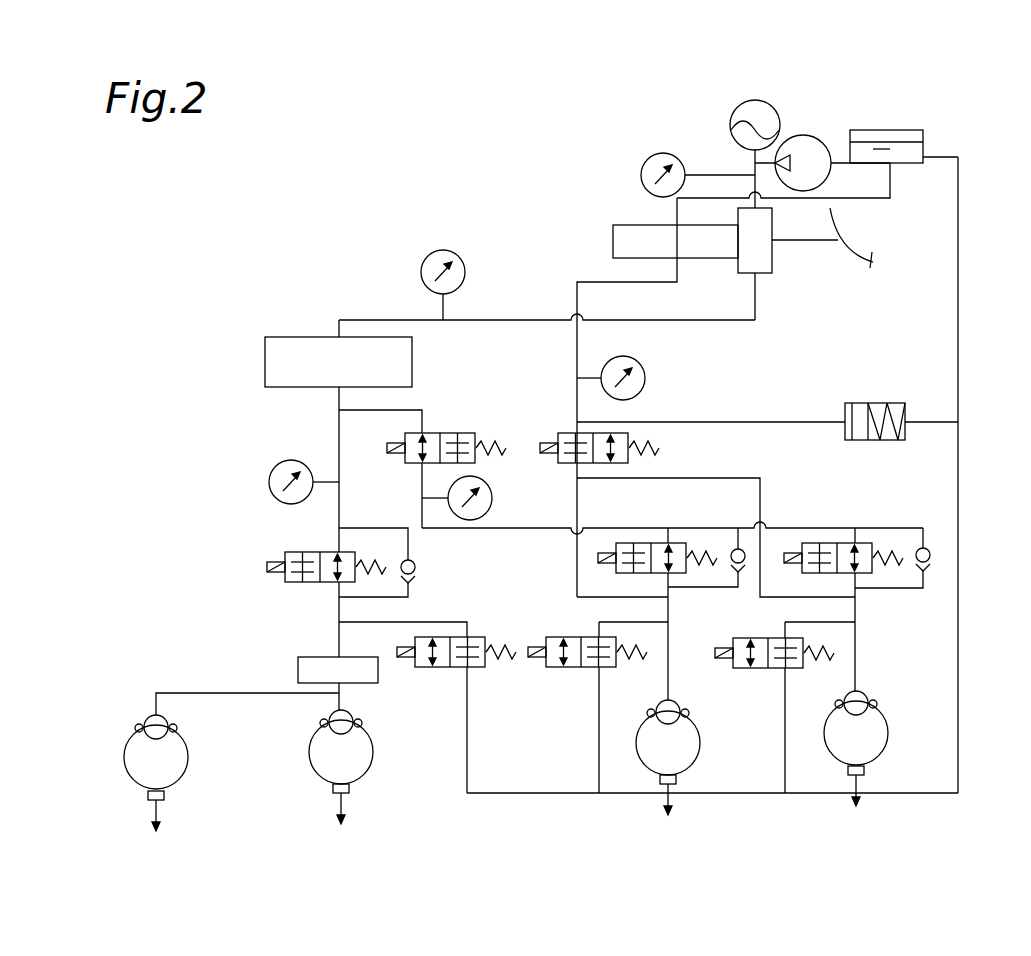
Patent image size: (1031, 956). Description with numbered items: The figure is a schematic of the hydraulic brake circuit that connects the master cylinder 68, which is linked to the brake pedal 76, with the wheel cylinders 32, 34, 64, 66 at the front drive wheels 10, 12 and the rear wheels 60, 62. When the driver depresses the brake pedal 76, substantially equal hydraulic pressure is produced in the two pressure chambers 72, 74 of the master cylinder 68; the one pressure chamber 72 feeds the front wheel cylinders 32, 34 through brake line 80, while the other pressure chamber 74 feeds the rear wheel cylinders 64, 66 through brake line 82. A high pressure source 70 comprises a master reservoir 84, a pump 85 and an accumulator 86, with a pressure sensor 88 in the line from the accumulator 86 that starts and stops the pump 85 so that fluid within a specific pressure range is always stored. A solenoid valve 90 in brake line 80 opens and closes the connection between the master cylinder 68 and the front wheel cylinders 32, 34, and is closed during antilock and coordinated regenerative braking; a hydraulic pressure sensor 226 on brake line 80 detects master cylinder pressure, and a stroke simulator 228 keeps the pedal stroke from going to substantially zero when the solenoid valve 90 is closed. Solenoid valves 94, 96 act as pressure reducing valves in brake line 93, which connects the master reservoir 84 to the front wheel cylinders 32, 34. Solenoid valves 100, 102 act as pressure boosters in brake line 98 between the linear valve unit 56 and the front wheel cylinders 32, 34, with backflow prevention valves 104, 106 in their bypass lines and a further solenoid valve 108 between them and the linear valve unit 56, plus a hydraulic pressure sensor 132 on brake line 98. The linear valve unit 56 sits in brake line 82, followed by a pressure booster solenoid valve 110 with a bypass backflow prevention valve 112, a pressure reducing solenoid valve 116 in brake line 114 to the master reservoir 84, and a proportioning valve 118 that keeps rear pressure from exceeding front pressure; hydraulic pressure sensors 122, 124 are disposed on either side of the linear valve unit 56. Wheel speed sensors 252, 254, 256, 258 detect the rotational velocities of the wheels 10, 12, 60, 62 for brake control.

The front drive wheel 10 is at (890, 730).
The front drive wheel 12 is at (695, 740).
The wheel cylinder 32 is at (866, 697).
The wheel cylinder 34 is at (658, 702).
The linear valve unit 56 is at (412, 359).
The rear wheel 60 is at (373, 750).
The rear wheel 62 is at (188, 754).
The wheel cylinder 64 is at (355, 717).
The wheel cylinder 66 is at (168, 722).
The master cylinder 68 is at (604, 211).
The high pressure source 70 is at (841, 119).
The pressure chamber 72 is at (705, 258).
The pressure chamber 74 is at (772, 263).
The brake pedal 76 is at (875, 258).
The brake line 80 is at (577, 297).
The brake line 82 is at (366, 320).
The master reservoir 84 is at (923, 137).
The pump 85 is at (828, 179).
The accumulator 86 is at (732, 130).
The pressure sensor 88 is at (642, 175).
The solenoid valve 90 is at (630, 438).
The brake line 93 is at (958, 284).
The solenoid valve 94 is at (741, 668).
The solenoid valve 96 is at (558, 667).
The brake line 98 is at (425, 410).
The solenoid valve 100 is at (812, 573).
The solenoid valve 102 is at (626, 573).
The backflow prevention valve 104 is at (924, 540).
The backflow prevention valve 106 is at (742, 575).
The solenoid valve 108 is at (415, 465).
The solenoid valve 110 is at (300, 582).
The backflow prevention valve 112 is at (418, 578).
The brake line 114 is at (452, 622).
The solenoid valve 116 is at (444, 667).
The proportioning valve 118 is at (298, 670).
The hydraulic pressure sensor 122 is at (443, 249).
The hydraulic pressure sensor 124 is at (268, 482).
The hydraulic pressure sensor 132 is at (492, 498).
The hydraulic pressure sensor 226 is at (645, 378).
The stroke simulator 228 is at (860, 440).
The wheel speed sensor 252 is at (867, 771).
The wheel speed sensor 254 is at (672, 779).
The wheel speed sensor 256 is at (350, 788).
The wheel speed sensor 258 is at (162, 796).